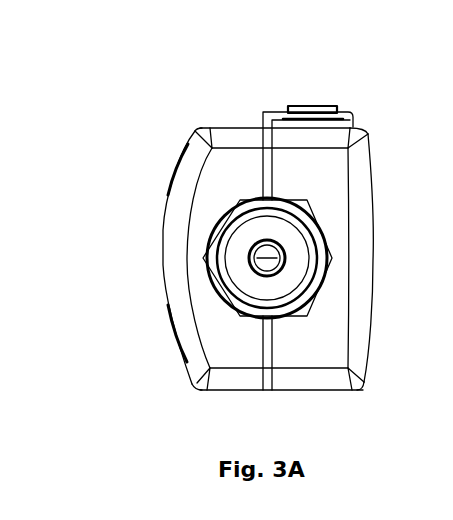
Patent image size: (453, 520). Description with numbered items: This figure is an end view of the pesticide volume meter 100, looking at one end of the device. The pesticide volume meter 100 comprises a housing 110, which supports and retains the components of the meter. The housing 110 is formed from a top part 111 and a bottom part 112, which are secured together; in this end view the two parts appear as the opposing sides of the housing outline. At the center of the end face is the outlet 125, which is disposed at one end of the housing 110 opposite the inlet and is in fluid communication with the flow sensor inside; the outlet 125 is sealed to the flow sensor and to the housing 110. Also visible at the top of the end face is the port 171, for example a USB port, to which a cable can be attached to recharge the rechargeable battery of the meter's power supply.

The pesticide volume meter 100 is at (192, 97).
The housing 110 is at (196, 132).
The top part 111 is at (167, 218).
The bottom part 112 is at (373, 270).
The outlet 125 is at (223, 282).
The port 171 is at (317, 105).